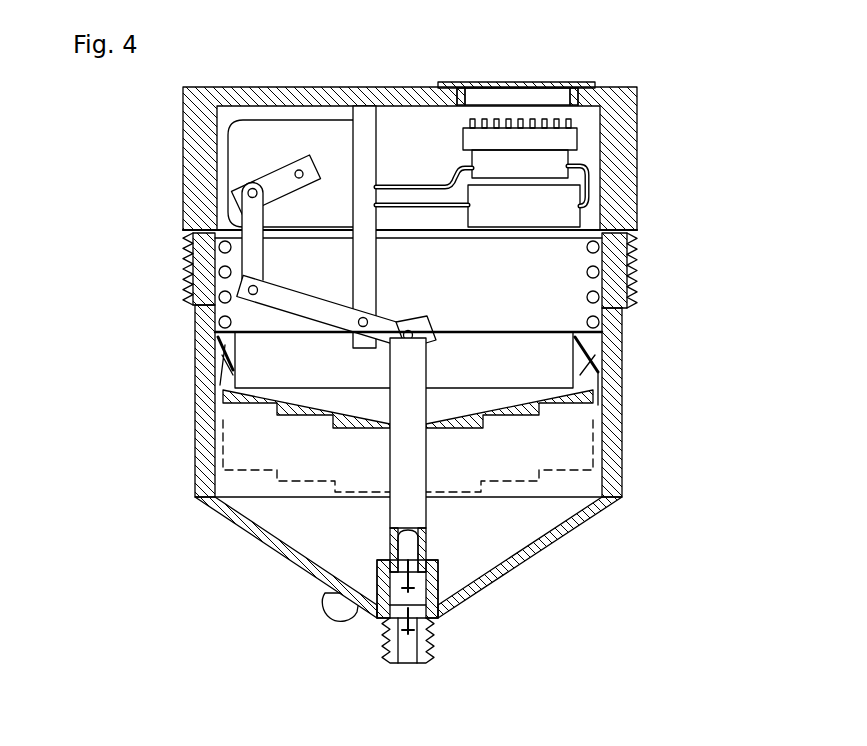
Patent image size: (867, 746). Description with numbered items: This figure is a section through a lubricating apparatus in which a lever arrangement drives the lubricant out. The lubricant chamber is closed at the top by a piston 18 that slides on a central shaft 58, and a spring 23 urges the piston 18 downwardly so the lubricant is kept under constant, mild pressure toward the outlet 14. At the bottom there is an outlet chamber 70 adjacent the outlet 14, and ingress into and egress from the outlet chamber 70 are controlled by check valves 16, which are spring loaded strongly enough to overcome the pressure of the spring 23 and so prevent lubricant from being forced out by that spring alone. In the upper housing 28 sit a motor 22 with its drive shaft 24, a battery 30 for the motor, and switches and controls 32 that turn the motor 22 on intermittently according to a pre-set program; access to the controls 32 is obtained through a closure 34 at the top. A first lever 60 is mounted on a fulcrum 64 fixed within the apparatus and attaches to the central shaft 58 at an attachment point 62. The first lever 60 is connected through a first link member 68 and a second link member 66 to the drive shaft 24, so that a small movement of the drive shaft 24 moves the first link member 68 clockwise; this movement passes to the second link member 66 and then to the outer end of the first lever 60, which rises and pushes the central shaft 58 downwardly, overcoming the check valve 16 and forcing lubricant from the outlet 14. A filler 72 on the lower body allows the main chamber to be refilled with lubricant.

The outlet 14 is at (382, 645).
The check valve 16 is at (400, 592).
The piston 18 is at (580, 372).
The motor 22 is at (305, 130).
The spring 23 is at (612, 326).
The drive shaft 24 is at (297, 183).
The upper housing 28 is at (638, 100).
The battery 30 is at (565, 222).
The switches and controls 32 is at (567, 140).
The closure 34 is at (487, 83).
The central shaft 58 is at (398, 447).
The first lever 60 is at (290, 300).
The attachment point 62 is at (412, 322).
The fulcrum 64 is at (364, 280).
The second link member 66 is at (253, 252).
The first link member 68 is at (268, 185).
The outlet chamber 70 is at (418, 597).
The filler 72 is at (333, 622).